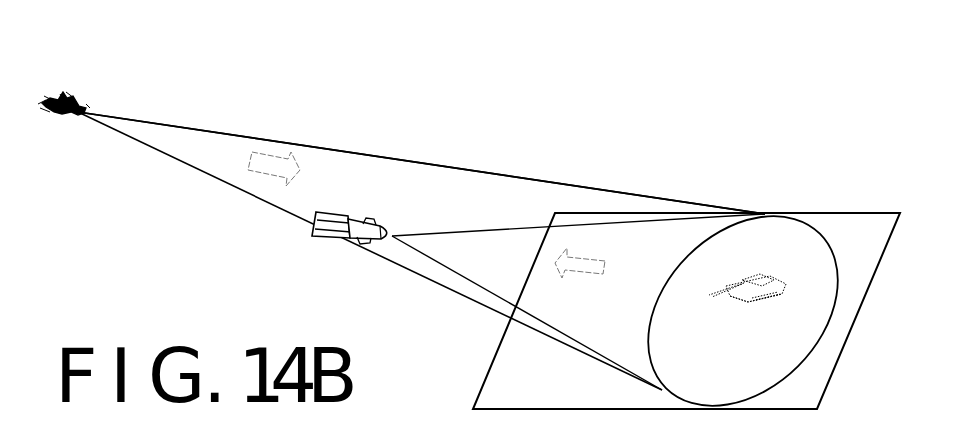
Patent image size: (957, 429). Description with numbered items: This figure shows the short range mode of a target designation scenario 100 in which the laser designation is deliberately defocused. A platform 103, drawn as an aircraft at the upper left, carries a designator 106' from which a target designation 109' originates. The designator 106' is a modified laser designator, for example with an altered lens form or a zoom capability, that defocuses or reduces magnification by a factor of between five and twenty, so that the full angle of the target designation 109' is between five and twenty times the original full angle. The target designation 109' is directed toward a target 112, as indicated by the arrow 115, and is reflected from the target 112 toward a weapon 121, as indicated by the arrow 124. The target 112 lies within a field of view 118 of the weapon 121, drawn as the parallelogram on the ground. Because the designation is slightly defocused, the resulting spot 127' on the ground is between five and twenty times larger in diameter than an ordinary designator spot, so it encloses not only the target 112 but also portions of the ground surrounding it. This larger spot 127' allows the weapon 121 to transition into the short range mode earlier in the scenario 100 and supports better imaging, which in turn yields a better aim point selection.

The scenario 100 is at (167, 31).
The platform 103 is at (68, 97).
The designator 106' is at (401, 251).
The target designation 109' is at (421, 175).
The target 112 is at (745, 289).
The arrow 115 is at (294, 160).
The field of view 118 is at (530, 398).
The weapon 121 is at (313, 238).
The arrow 124 is at (580, 275).
The spot 127' is at (743, 295).